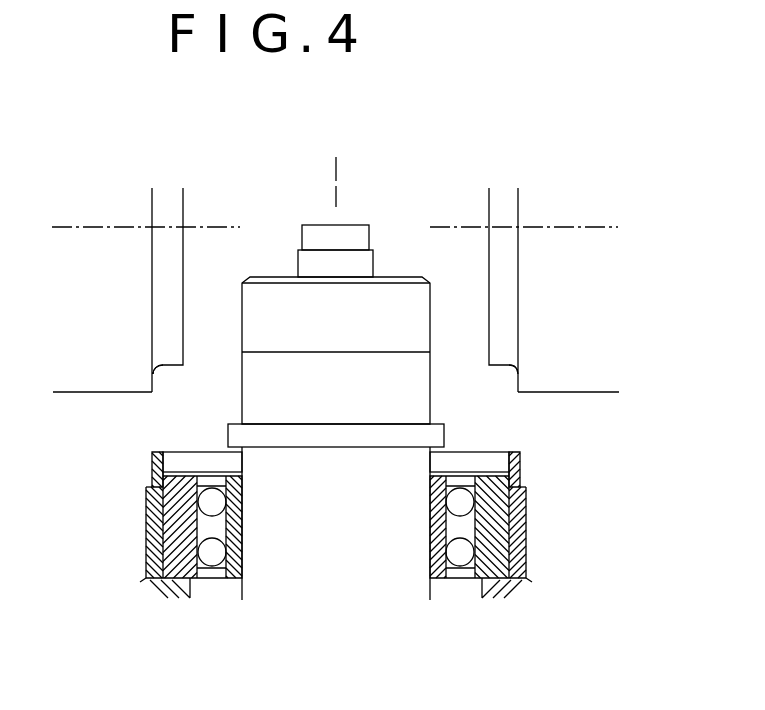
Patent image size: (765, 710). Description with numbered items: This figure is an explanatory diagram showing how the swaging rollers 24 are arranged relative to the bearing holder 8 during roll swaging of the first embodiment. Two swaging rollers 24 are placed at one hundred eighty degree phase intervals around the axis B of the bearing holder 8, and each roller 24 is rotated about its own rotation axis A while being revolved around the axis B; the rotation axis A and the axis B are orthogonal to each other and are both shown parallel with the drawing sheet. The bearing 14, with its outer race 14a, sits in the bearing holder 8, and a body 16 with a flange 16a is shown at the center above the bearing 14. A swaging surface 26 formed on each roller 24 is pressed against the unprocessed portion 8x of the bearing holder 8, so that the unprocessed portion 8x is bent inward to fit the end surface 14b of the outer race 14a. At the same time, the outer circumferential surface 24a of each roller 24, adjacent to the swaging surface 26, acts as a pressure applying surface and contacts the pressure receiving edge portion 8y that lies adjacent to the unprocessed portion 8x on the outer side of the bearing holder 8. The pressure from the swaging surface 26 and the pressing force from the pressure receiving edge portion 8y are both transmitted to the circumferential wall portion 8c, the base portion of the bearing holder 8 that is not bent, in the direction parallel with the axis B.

The bearing holder 8 is at (142, 583).
The circumferential wall portion 8c is at (152, 508).
The unprocessed portion 8x is at (155, 462).
The pressure receiving edge portion 8y is at (152, 487).
The bearing 14 is at (430, 513).
The outer race 14a is at (168, 548).
The end surface 14b is at (185, 470).
The body portion 16 is at (431, 405).
The flange portion 16a is at (257, 403).
The swaging roller 24 is at (184, 252).
The outer circumferential surface 24a is at (105, 392).
The swaging surface 26 is at (156, 367).
The rotation axis A is at (210, 227).
The axis B is at (337, 181).